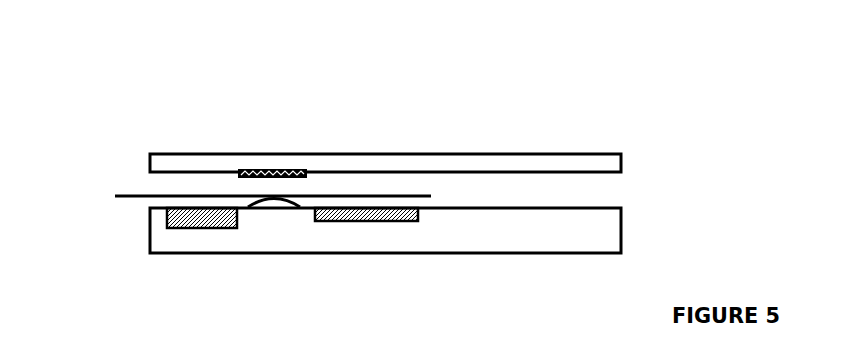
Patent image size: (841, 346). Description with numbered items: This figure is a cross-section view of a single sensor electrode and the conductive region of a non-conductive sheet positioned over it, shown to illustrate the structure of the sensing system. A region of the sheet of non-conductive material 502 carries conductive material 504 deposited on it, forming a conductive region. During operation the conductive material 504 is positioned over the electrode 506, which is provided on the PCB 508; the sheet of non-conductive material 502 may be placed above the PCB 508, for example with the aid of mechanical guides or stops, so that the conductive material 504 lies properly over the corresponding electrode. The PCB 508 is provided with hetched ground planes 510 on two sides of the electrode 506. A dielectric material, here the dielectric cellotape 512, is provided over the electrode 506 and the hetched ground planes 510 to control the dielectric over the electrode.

The sheet of non-conductive material 502 is at (518, 155).
The conductive material 504 is at (271, 168).
The electrode 506 is at (297, 202).
The PCB 508 is at (385, 230).
The hetched ground planes 510 is at (337, 224).
The dielectric cellotape 512 is at (118, 193).